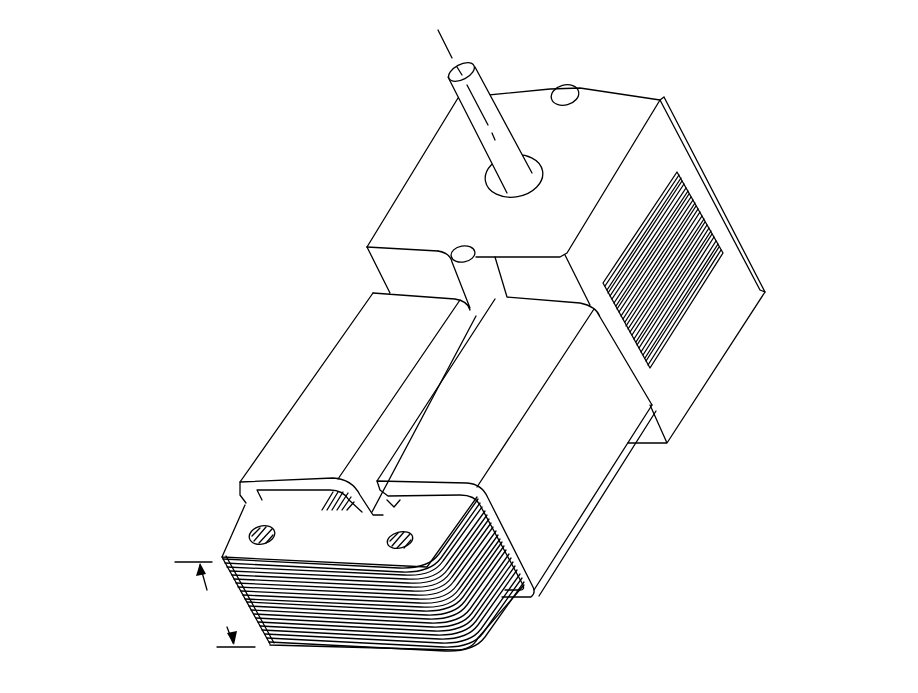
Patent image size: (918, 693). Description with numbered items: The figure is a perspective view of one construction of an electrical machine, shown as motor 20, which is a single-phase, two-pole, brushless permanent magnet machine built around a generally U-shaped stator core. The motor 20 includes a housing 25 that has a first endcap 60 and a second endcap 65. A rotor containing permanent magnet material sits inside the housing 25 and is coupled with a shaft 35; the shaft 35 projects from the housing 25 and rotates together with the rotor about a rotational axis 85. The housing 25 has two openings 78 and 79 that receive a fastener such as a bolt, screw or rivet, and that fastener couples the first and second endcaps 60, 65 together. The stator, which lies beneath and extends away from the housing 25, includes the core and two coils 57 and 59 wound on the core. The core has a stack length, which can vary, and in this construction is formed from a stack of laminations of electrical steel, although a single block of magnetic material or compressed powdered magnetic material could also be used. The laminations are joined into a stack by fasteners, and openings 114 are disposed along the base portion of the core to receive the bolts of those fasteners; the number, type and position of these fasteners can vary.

The motor 20 is at (297, 216).
The housing 25 is at (617, 128).
The shaft 35 is at (495, 108).
The coil 57 is at (340, 378).
The coil 59 is at (582, 468).
The first endcap 60 is at (642, 187).
The second endcap 65 is at (737, 280).
The opening 78 is at (573, 92).
The opening 79 is at (467, 252).
The rotational axis 85 is at (452, 47).
The openings 114 is at (262, 535).